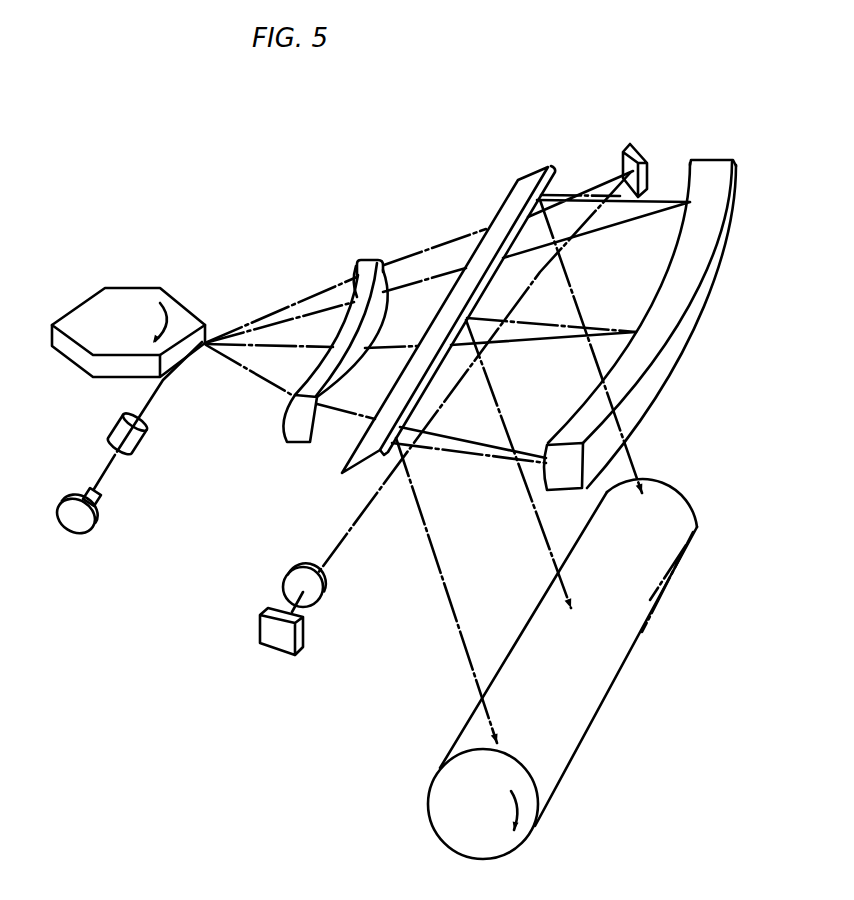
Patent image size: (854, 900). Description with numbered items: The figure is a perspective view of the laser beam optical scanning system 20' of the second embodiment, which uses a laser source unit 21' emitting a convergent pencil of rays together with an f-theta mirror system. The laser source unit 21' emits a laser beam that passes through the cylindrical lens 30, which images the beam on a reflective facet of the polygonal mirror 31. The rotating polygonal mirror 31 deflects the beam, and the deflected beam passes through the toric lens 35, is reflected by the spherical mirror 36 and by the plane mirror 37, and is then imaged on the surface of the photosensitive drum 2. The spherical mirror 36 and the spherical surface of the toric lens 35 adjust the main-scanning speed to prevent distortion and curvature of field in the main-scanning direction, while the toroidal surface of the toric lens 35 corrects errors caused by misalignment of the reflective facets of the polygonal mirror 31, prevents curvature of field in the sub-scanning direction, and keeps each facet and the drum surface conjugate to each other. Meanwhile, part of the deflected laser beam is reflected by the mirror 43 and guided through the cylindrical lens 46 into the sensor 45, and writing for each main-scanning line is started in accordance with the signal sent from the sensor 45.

The photosensitive drum 2 is at (452, 742).
The laser beam optical scanning system 20' is at (404, 105).
The laser source unit 21' is at (115, 514).
The cylindrical lens 30 is at (148, 432).
The polygonal mirror 31 is at (140, 288).
The toric lens 35 is at (372, 259).
The spherical mirror 36 is at (660, 286).
The plane mirror 37 is at (561, 174).
The mirror 43 is at (623, 153).
The sensor 45 is at (258, 627).
The cylindrical lens 46 is at (298, 566).